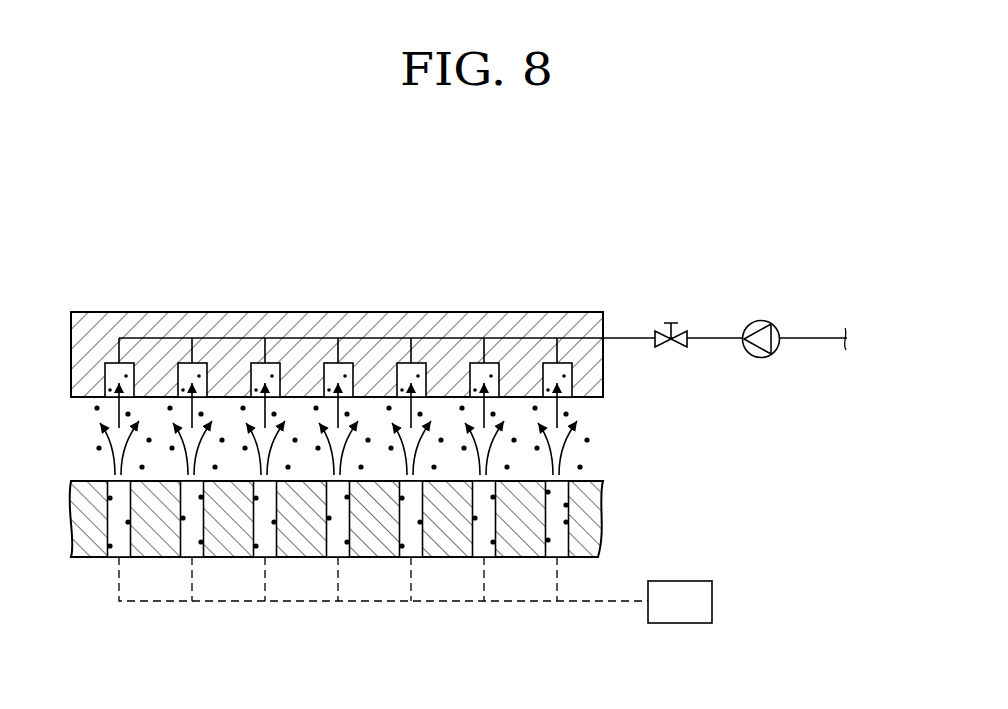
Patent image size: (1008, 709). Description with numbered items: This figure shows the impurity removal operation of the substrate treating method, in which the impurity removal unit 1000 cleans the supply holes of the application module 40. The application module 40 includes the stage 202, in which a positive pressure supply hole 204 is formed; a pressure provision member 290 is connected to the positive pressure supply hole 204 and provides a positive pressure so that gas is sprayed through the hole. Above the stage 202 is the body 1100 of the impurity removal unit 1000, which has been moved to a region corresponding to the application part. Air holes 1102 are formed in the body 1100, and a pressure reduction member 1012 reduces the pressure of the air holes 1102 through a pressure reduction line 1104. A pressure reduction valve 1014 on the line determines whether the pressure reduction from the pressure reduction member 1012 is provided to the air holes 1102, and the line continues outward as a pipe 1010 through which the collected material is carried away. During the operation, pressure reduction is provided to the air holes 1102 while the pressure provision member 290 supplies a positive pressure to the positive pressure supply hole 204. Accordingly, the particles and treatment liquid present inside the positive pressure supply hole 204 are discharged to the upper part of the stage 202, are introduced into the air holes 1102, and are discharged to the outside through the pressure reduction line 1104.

The impurity removal unit 1000 is at (562, 246).
The body 1100 is at (455, 312).
The air holes 1102 is at (108, 372).
The pressure reduction line 1104 is at (308, 338).
The supply pipe 1010 is at (822, 336).
The pressure reduction member 1012 is at (756, 320).
The pressure reduction valve 1014 is at (671, 323).
The application module 40 is at (176, 622).
The stage 202 is at (592, 520).
The positive pressure supply hole 204 is at (116, 520).
The pressure provision member 290 is at (712, 601).